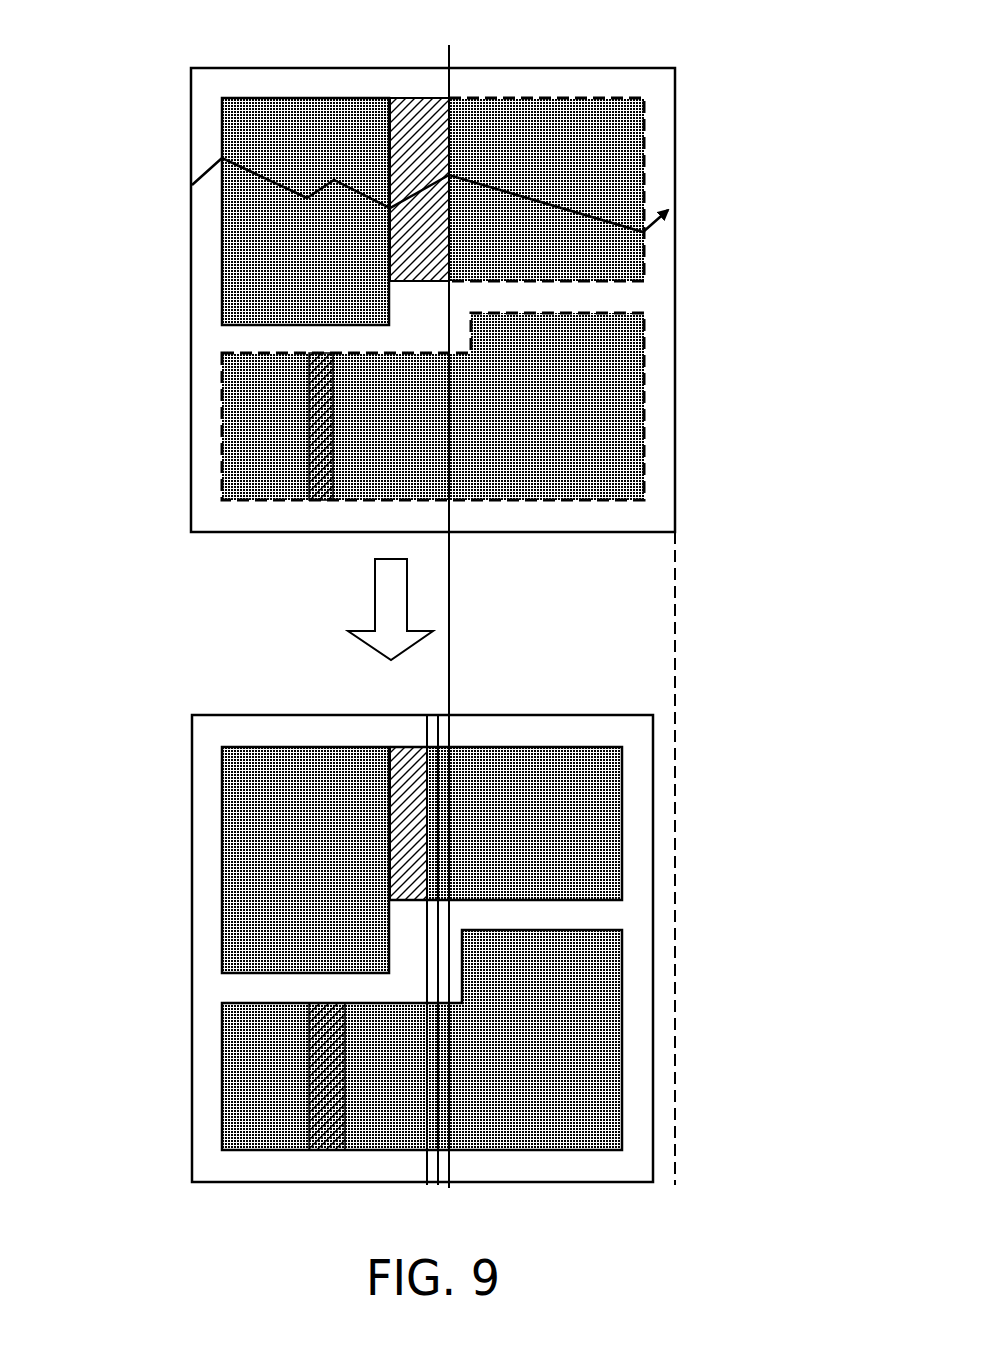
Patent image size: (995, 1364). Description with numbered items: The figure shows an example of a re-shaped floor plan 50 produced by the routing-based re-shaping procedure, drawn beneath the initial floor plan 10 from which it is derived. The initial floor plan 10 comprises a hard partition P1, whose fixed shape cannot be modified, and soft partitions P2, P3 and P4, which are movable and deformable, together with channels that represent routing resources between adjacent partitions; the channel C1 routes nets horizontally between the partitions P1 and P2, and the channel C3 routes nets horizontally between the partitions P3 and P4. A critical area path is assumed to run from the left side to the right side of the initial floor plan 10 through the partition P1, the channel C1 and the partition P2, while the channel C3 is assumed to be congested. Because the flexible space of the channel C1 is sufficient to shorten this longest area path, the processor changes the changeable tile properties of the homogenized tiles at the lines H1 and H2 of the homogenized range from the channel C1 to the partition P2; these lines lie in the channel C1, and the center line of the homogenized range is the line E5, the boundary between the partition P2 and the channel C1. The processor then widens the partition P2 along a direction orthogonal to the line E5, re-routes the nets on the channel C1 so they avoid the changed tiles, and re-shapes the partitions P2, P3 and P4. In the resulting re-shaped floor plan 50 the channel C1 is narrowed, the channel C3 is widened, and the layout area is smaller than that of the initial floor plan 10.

The initial floor plan 10 is at (717, 76).
The re-shaped floor plan 50 is at (147, 730).
The partition P1 is at (288, 273).
The partition P2 is at (529, 161).
The partition P3 is at (249, 441).
The partition P4 is at (471, 420).
The channel C1 is at (400, 140).
The channel C3 is at (325, 502).
The line H1 is at (427, 733).
The line H2 is at (433, 1179).
The line E5 is at (452, 1163).